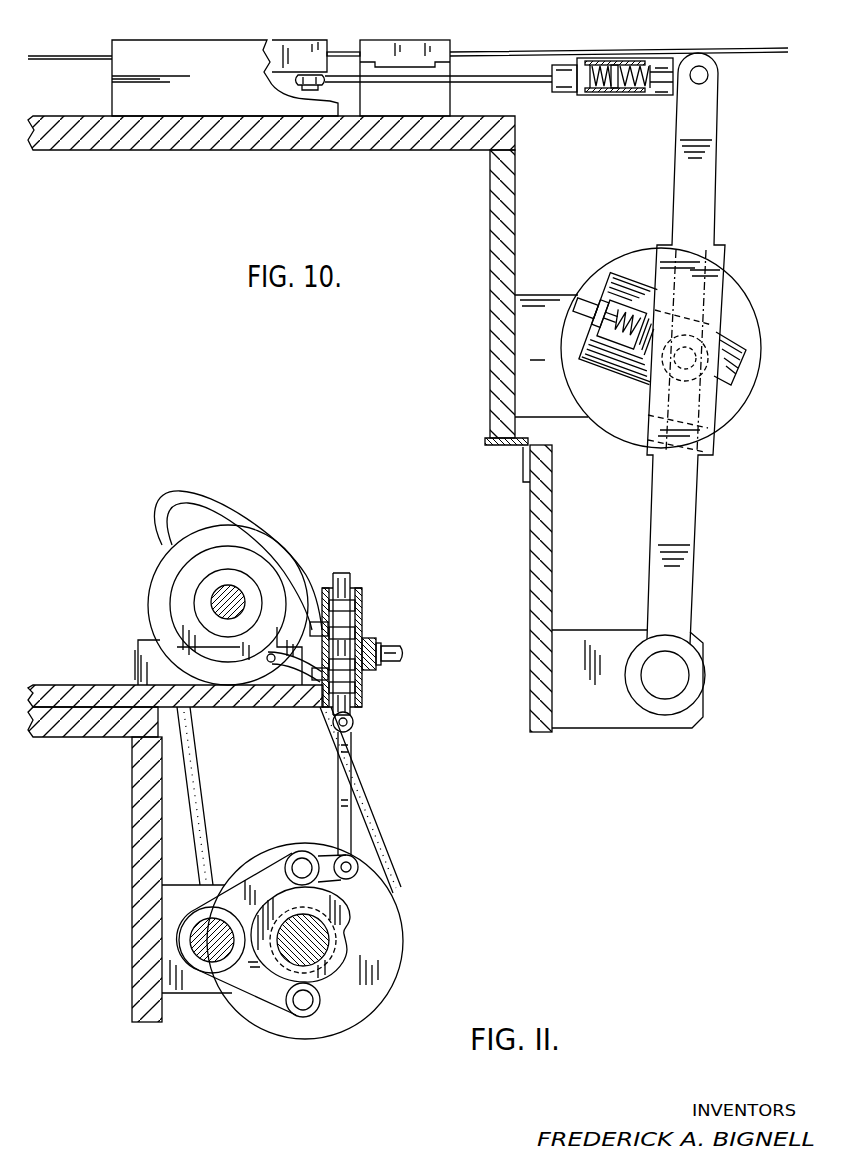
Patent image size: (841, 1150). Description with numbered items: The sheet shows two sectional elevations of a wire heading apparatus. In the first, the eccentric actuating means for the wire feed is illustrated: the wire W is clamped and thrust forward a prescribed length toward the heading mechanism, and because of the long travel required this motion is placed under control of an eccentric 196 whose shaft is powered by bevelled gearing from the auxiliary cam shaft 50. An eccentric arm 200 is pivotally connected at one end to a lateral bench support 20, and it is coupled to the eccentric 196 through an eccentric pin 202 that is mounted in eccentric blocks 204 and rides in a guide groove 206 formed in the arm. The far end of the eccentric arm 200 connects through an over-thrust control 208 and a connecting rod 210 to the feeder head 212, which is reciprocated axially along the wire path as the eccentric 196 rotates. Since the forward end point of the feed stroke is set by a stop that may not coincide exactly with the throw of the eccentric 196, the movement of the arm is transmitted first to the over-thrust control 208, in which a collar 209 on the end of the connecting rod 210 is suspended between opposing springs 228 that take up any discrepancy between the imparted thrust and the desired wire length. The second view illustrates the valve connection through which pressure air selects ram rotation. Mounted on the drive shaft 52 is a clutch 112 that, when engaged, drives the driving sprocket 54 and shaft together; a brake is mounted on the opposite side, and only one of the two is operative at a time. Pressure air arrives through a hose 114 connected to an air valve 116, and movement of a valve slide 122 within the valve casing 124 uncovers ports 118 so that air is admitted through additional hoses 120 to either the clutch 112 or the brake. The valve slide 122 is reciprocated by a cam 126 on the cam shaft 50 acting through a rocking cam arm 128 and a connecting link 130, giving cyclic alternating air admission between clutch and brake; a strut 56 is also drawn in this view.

In FIG. 10, the lateral bench support 20 is at (530, 390).
In FIG. 10, the eccentric 196 is at (748, 392).
In FIG. 10, the eccentric arm 200 is at (692, 540).
In FIG. 10, the eccentric pin 202 is at (703, 352).
In FIG. 10, the eccentric blocks 204 is at (618, 278).
In FIG. 10, the guide groove 206 is at (712, 267).
In FIG. 10, the over-thrust control 208 is at (643, 113).
In FIG. 10, the collar 209 is at (614, 66).
In FIG. 10, the connecting rod 210 is at (535, 84).
In FIG. 10, the feeder head 212 is at (313, 40).
In FIG. 10, the opposing springs 228 is at (630, 92).
In FIG. 10, the wire W is at (518, 34).
In FIG. 11, the cam shaft 50 is at (322, 950).
In FIG. 11, the drive shaft 52 is at (224, 614).
In FIG. 11, the driving sprocket 54 is at (222, 546).
In FIG. 11, the strut 56 is at (376, 848).
In FIG. 11, the clutch 112 is at (152, 588).
In FIG. 11, the hose 114 is at (401, 646).
In FIG. 11, the air valve 116 is at (377, 630).
In FIG. 11, the ports 118 is at (326, 672).
In FIG. 11, the hoses 120 is at (218, 503).
In FIG. 11, the valve slide 122 is at (341, 572).
In FIG. 11, the valve casing 124 is at (360, 587).
In FIG. 11, the cam 126 is at (345, 935).
In FIG. 11, the rocking cam arm 128 is at (263, 877).
In FIG. 11, the connecting link 130 is at (352, 812).